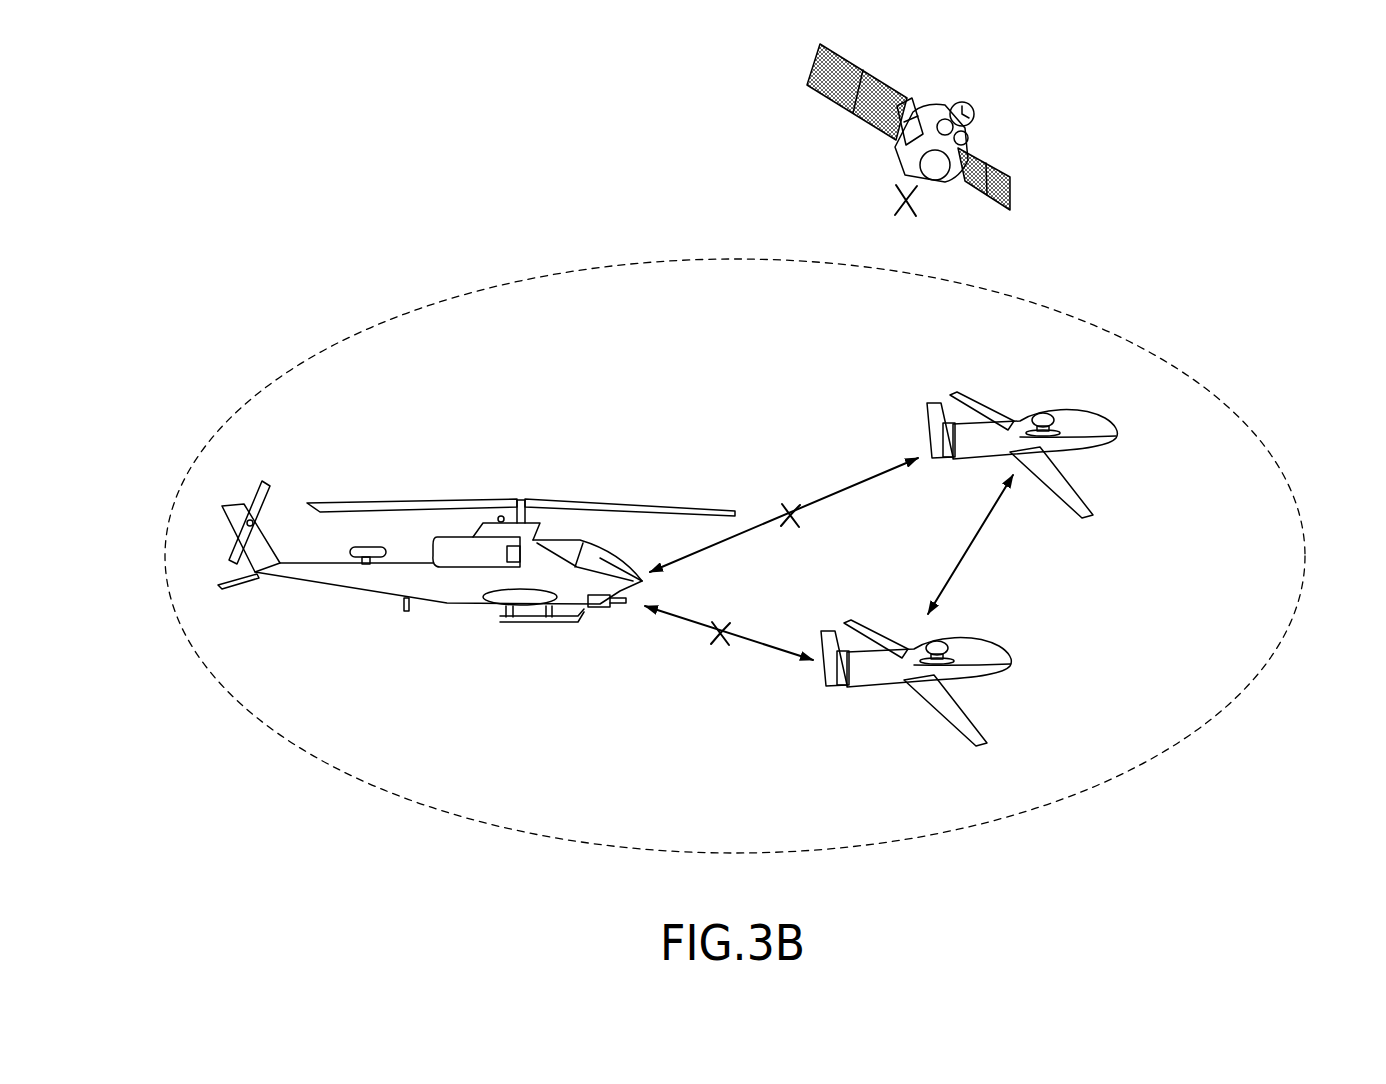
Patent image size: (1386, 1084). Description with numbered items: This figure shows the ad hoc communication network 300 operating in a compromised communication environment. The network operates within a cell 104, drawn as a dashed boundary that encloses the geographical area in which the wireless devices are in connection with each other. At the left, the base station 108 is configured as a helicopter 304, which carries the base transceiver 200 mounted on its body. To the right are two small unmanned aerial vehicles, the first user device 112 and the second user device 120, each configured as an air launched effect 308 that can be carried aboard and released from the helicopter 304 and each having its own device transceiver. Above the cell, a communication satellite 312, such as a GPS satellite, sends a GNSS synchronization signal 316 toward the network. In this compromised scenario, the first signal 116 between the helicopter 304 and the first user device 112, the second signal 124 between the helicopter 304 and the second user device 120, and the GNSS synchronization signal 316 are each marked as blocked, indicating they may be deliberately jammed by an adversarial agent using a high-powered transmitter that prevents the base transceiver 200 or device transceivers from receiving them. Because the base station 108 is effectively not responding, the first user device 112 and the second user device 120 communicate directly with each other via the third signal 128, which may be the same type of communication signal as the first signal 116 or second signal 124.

The ad hoc communication network 300 is at (263, 238).
The cell 104 is at (490, 288).
The base station 108 is at (476, 567).
The helicopter 304 is at (445, 593).
The base transceiver 200 is at (366, 547).
The first user device 112 is at (1068, 448).
The second user device 120 is at (965, 676).
The air launched effects 308 is at (1011, 560).
The first signal 116 is at (820, 507).
The second signal 124 is at (755, 640).
The third signal 128 is at (973, 547).
The communication satellite 312 is at (969, 84).
The GNSS synchronization signal 316 is at (887, 218).